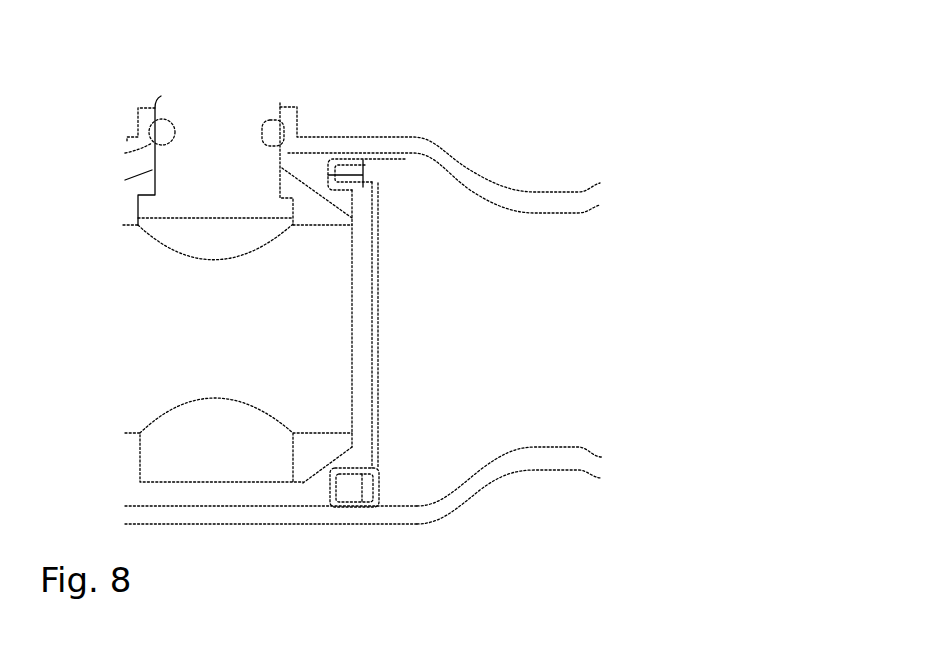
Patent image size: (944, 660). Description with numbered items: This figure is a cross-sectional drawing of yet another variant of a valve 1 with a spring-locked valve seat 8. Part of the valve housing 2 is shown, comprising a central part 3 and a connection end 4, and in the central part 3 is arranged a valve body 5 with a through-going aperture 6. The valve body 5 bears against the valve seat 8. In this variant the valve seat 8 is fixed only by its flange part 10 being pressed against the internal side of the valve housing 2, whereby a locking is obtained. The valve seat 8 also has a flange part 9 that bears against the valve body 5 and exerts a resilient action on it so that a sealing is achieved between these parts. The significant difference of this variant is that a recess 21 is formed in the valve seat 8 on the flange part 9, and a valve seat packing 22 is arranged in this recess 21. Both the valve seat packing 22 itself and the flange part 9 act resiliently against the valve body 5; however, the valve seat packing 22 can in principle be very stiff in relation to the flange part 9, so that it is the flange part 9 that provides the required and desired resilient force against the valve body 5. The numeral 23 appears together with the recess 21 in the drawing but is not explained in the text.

The valve 1 is at (336, 70).
The valve housing 2 is at (352, 143).
The central part 3 is at (238, 515).
The connection end 4 is at (547, 460).
The valve body 5 is at (311, 213).
The through-going aperture 6 is at (228, 338).
The valve seat 8 is at (377, 330).
The flange part 9 is at (363, 175).
The flange part 10 is at (362, 502).
The recess 21 is at (378, 208).
The valve seat packing 22 is at (355, 457).
The upper bracket layer 23 is at (422, 243).